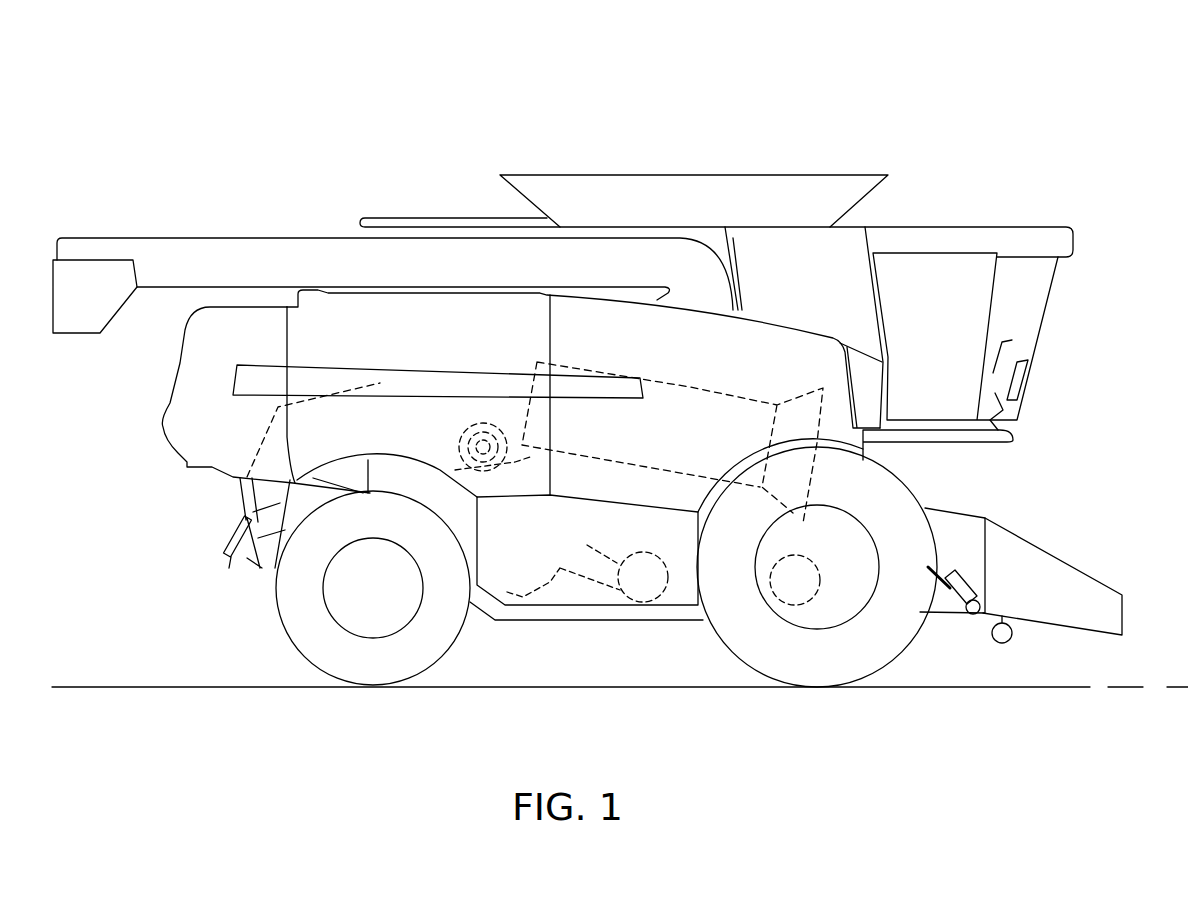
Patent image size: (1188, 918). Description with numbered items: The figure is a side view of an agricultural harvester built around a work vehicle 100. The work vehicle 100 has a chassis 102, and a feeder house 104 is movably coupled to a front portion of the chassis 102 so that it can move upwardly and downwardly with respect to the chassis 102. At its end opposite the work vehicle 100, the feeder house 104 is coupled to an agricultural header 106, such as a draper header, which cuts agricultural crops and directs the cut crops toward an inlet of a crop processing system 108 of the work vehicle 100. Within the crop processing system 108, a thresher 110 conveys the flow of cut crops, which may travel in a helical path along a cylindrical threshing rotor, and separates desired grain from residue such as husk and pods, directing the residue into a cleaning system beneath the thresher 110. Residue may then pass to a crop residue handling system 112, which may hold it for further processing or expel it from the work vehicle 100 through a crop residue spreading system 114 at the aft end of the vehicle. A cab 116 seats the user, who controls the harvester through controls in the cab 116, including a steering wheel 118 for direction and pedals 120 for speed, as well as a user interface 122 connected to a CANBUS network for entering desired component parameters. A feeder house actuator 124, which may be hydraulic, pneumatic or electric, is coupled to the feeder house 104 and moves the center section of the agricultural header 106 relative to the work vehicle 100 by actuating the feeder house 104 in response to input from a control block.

The work vehicle 100 is at (1080, 128).
The chassis 102 is at (526, 626).
The feeder house 104 is at (948, 543).
The agricultural header 106 is at (1063, 582).
The crop processing system 108 is at (685, 358).
The thresher 110 is at (692, 382).
The crop residue handling system 112 is at (421, 359).
The crop residue spreading system 114 is at (215, 535).
The cab 116 is at (1081, 279).
The steering wheel 118 is at (1003, 343).
The pedals 120 is at (995, 440).
The user interface 122 is at (1016, 391).
The feeder house actuator 124 is at (952, 600).